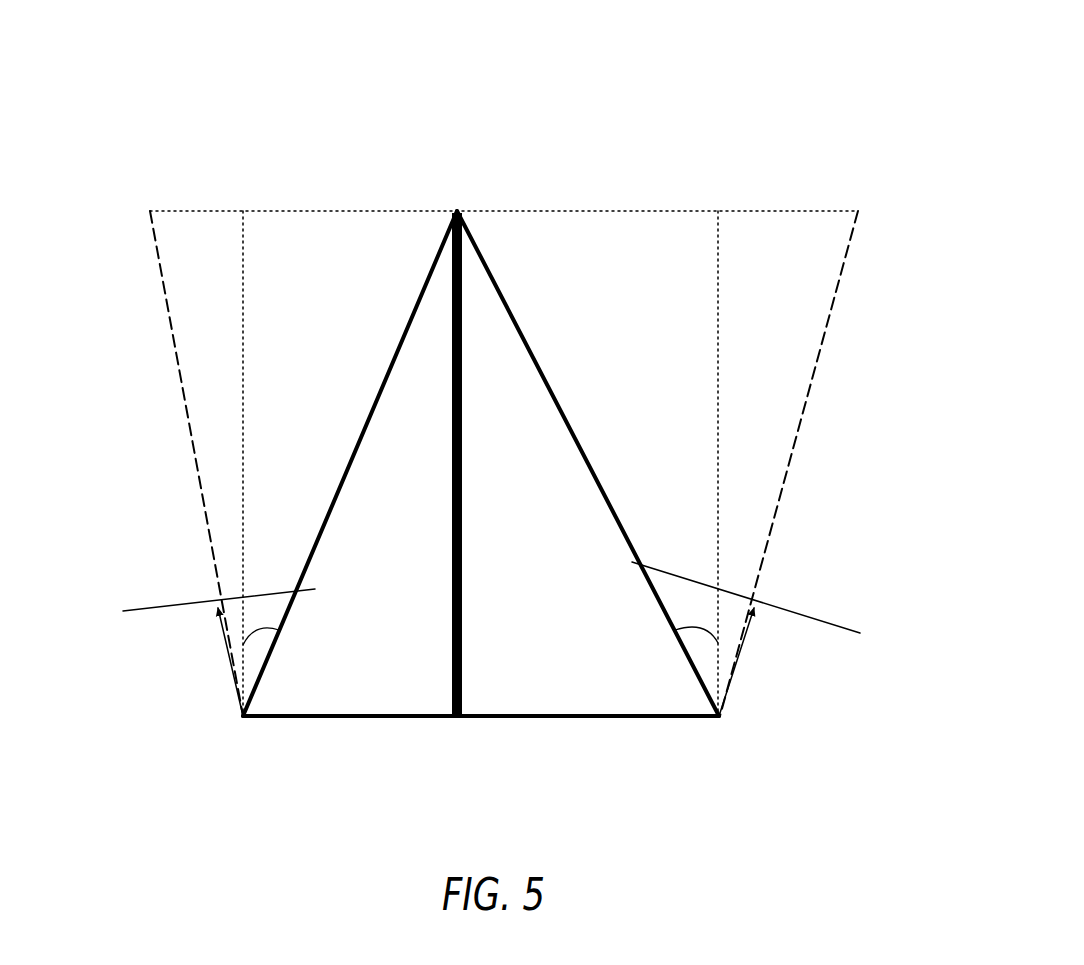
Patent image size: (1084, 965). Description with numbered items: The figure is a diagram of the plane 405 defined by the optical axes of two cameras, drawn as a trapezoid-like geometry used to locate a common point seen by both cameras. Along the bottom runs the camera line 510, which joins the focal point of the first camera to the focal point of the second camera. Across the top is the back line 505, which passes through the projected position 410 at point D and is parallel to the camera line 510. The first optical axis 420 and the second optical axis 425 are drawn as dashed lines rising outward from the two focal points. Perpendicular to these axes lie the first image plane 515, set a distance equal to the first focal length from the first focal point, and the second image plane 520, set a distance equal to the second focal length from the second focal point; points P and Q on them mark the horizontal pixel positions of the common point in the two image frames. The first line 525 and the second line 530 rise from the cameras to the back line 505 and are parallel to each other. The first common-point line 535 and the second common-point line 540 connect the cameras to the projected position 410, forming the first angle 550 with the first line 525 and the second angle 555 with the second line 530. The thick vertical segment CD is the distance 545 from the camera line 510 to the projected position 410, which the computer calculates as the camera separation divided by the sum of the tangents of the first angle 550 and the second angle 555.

The plane 405 is at (663, 58).
The projected position 410 is at (460, 211).
The first optical axis 420 is at (172, 334).
The second optical axis 425 is at (826, 333).
The back line 505 is at (367, 211).
The camera line 510 is at (358, 716).
The first image plane 515 is at (150, 608).
The second image plane 520 is at (812, 618).
The first line 525 is at (243, 292).
The second line 530 is at (718, 293).
The first common-point line 535 is at (359, 436).
The second common-point line 540 is at (573, 436).
The distance 545 is at (462, 528).
The first angle 550 is at (280, 632).
The second angle 555 is at (675, 632).